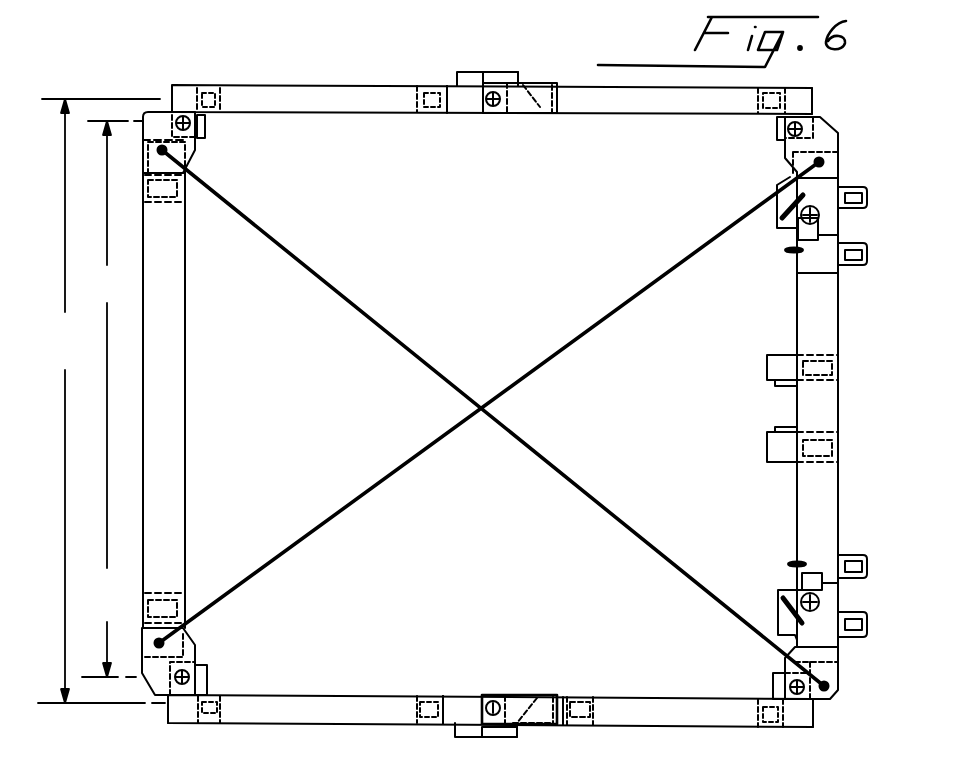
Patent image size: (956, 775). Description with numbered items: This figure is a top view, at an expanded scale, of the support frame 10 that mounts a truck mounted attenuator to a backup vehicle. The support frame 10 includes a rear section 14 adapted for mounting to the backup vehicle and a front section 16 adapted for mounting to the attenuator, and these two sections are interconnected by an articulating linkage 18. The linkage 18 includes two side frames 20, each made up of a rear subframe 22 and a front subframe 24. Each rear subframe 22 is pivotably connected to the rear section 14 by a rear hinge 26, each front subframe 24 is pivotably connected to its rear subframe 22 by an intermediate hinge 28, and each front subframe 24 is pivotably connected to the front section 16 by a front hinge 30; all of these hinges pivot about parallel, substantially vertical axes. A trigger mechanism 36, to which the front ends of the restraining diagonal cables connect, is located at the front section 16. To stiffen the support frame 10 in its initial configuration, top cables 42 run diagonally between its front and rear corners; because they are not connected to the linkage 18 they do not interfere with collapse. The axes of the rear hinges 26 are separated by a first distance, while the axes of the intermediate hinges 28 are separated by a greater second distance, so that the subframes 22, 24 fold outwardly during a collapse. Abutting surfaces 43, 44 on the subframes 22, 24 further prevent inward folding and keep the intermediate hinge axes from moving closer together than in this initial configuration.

The support frame 10 is at (128, 586).
The rear section 14 is at (168, 519).
The front section 16 is at (839, 500).
The articulating linkage 18 is at (556, 138).
The side frame 20 is at (373, 741).
The rear subframe 22 is at (328, 100).
The front subframe 24 is at (610, 105).
The rear hinge 26 is at (173, 111).
The intermediate hinge 28 is at (508, 92).
The front hinge 30 is at (805, 118).
The trigger mechanism 36 is at (866, 600).
The top cables 42 is at (393, 342).
The abutting surface 43 is at (470, 736).
The abutting surface 44 is at (508, 735).